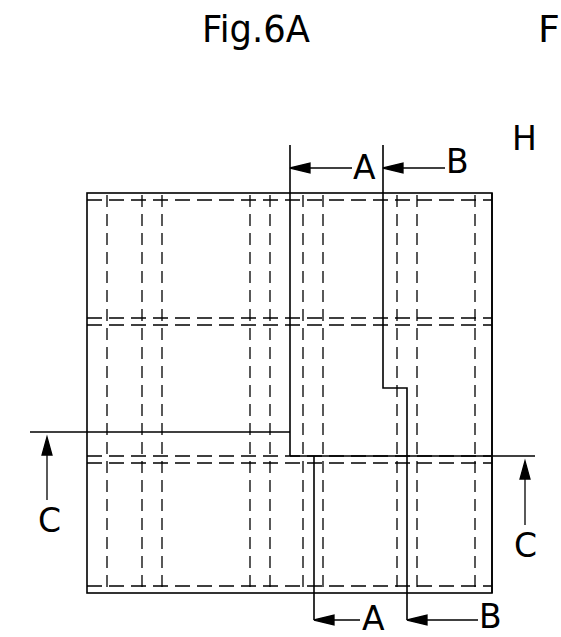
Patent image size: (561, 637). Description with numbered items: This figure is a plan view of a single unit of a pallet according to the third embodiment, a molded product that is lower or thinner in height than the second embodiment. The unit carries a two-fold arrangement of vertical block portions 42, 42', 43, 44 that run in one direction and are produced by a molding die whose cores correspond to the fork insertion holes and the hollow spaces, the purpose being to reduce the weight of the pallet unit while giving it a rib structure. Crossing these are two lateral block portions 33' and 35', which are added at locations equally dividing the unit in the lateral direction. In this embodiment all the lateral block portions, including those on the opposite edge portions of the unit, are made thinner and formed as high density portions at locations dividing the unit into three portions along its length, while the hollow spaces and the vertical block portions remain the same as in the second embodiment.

The vertical block portion 42 is at (258, 393).
The vertical block portion 42' is at (291, 361).
The vertical block portion 43 is at (266, 192).
The vertical block portion 44 is at (492, 218).
The lateral block portion 33' is at (324, 350).
The lateral block portion 35' is at (320, 426).